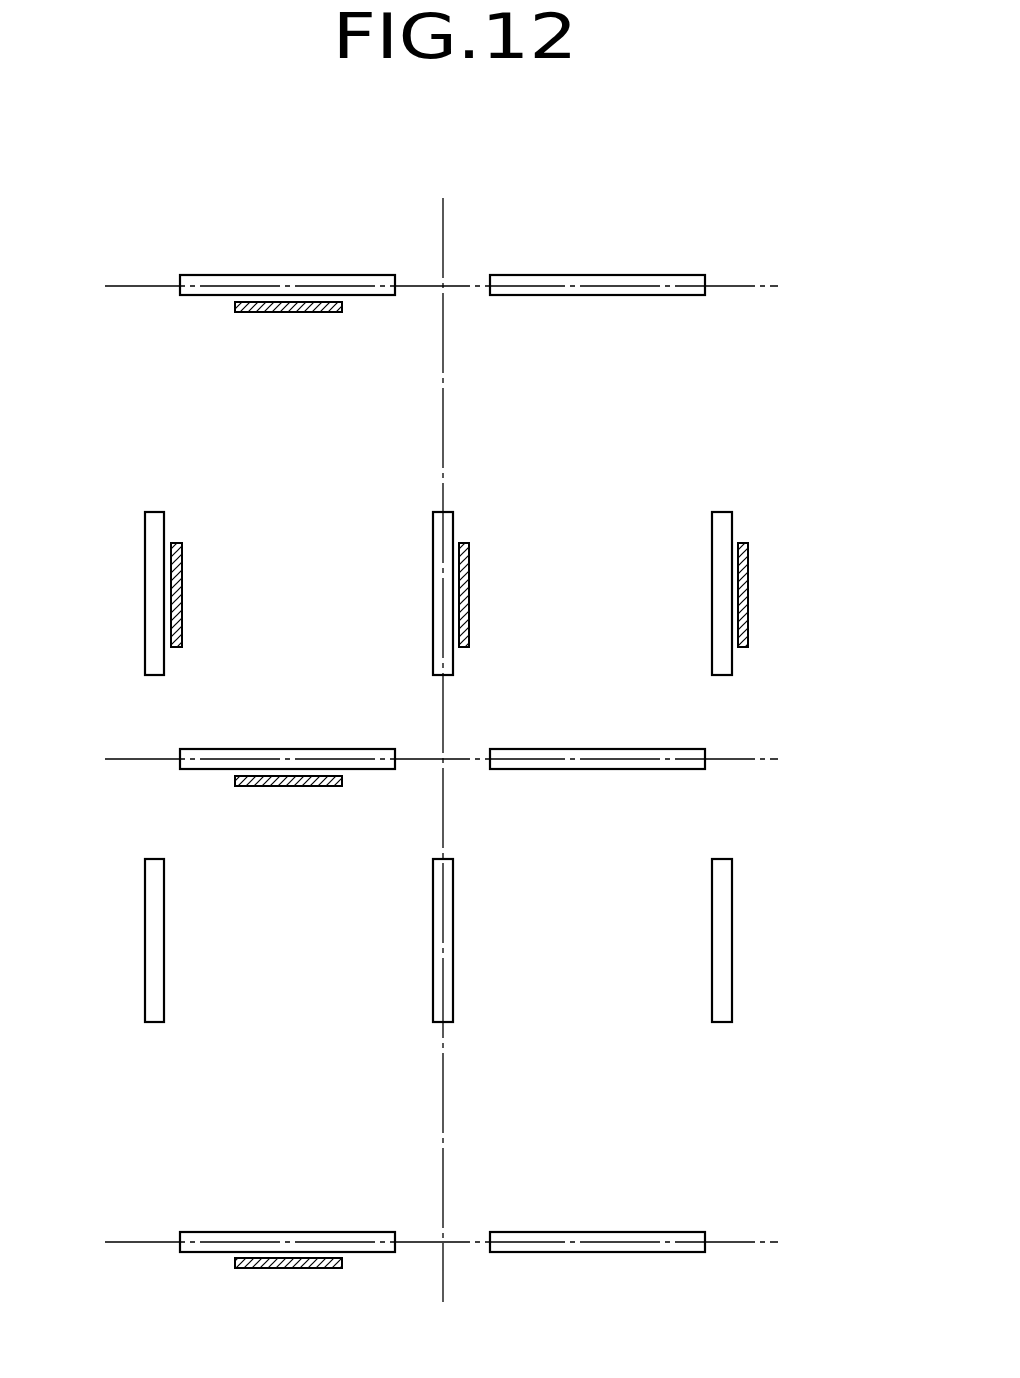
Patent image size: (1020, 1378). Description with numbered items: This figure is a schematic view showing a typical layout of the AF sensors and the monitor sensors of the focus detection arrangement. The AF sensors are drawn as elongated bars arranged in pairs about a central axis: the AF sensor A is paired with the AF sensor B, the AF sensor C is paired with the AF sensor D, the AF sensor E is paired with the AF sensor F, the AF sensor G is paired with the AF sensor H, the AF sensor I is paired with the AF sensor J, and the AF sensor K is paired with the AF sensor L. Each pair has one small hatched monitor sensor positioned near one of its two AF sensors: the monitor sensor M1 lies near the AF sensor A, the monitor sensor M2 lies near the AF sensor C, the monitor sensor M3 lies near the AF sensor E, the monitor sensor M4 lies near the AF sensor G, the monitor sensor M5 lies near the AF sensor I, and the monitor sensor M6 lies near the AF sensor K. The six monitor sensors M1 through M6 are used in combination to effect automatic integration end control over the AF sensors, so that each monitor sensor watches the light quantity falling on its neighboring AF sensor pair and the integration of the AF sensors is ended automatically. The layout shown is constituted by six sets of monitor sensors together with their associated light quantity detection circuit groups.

The AF sensor A is at (279, 749).
The AF sensor B is at (599, 749).
The AF sensor C is at (455, 512).
The AF sensor D is at (443, 945).
The AF sensor E is at (154, 512).
The AF sensor F is at (155, 945).
The AF sensor G is at (721, 512).
The AF sensor H is at (722, 945).
The AF sensor I is at (279, 275).
The AF sensor J is at (596, 275).
The AF sensor K is at (279, 1232).
The AF sensor L is at (599, 1232).
The monitor sensor M1 is at (283, 786).
The monitor sensor M2 is at (469, 595).
The monitor sensor M3 is at (182, 595).
The monitor sensor M4 is at (748, 595).
The monitor sensor M5 is at (283, 312).
The monitor sensor M6 is at (283, 1268).